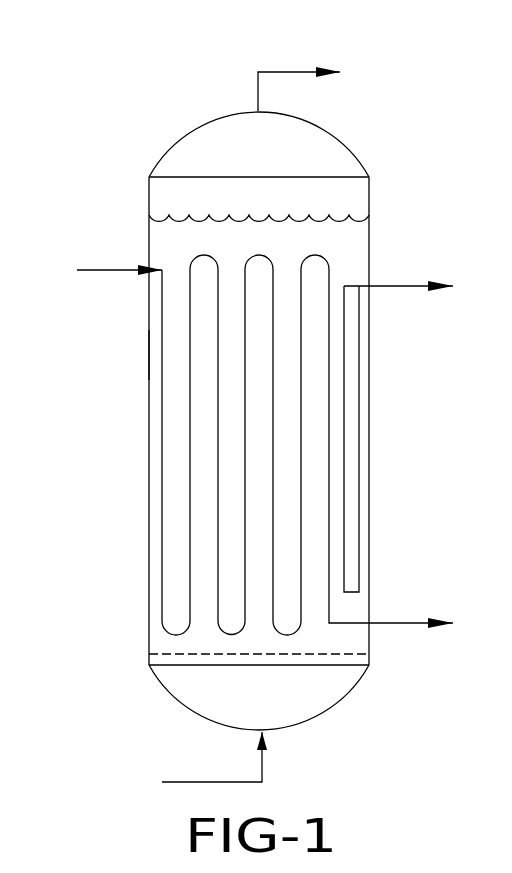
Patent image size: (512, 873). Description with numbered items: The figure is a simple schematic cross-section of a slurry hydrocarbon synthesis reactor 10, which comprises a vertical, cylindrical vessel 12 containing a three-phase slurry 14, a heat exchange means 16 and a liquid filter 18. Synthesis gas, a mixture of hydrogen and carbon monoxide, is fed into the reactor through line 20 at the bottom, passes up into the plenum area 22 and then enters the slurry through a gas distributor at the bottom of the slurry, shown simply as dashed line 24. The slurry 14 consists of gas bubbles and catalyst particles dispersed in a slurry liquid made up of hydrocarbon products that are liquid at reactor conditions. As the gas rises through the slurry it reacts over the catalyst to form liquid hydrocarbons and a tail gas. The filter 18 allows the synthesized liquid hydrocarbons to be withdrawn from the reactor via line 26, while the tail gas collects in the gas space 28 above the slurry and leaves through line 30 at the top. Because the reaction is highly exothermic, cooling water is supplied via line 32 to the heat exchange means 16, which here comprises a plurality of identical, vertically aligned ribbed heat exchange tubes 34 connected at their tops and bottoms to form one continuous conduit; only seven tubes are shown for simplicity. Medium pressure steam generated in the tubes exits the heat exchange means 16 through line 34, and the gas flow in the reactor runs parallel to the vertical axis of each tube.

The slurry hydrocarbon synthesis reactor 10 is at (110, 136).
The vertical cylindrical vessel 12 is at (370, 200).
The three-phase slurry 14 is at (348, 242).
The heat exchange means 16 is at (145, 354).
The liquid filter 18 is at (353, 421).
The synthesis gas feed line 20 is at (202, 780).
The plenum area 22 is at (276, 711).
The gas distributor 24 is at (163, 653).
The liquid removal line 26 is at (395, 290).
The gas space 28 is at (274, 163).
The tail gas removal line 30 is at (297, 72).
The cooling water line 32 is at (120, 268).
The ribbed heat exchange tubes 34 is at (217, 300).